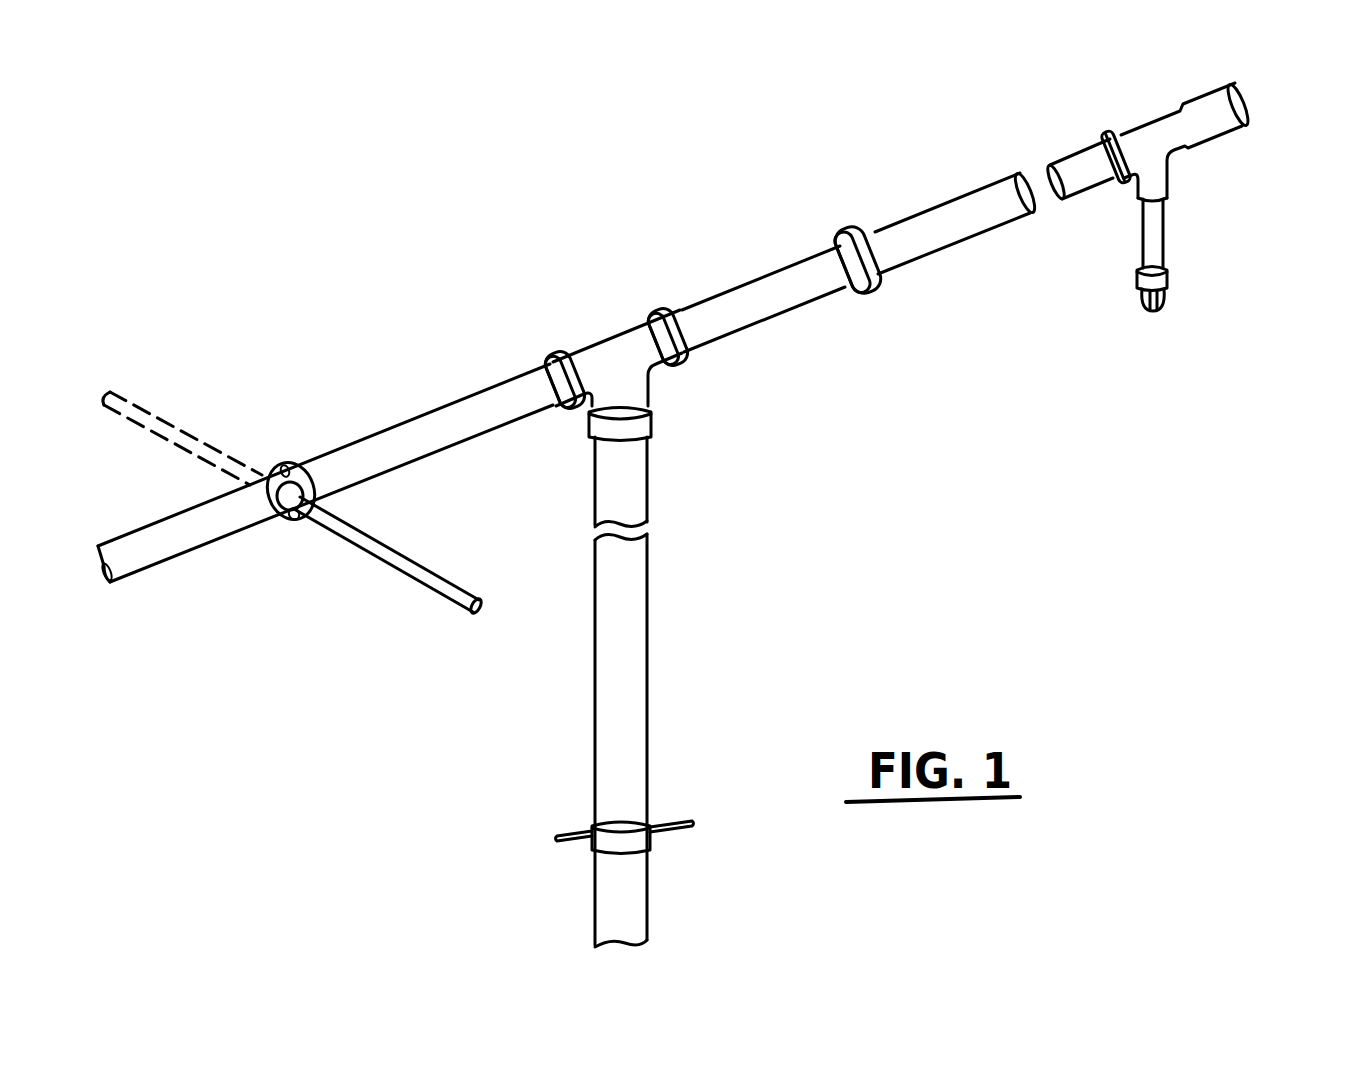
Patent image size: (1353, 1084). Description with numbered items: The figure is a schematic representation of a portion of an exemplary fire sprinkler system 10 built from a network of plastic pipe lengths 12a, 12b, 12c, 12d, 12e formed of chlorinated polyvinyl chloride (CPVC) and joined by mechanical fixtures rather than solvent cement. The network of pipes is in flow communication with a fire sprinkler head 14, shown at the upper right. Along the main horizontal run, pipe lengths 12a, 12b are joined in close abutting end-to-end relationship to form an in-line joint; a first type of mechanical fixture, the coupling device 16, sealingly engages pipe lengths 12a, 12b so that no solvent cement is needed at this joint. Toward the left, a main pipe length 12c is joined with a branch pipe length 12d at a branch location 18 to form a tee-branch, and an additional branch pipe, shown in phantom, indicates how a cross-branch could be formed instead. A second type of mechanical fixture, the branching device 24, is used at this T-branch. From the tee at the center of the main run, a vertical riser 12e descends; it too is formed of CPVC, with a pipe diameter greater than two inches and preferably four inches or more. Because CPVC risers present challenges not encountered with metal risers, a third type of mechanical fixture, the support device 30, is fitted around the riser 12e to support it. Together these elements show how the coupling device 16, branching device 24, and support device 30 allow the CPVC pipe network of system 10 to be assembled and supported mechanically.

The fire sprinkler system 10 is at (932, 495).
The pipe length 12a is at (703, 313).
The pipe length 12b is at (925, 233).
The main pipe length 12c is at (399, 445).
The branch pipe length 12d is at (452, 589).
The vertical riser 12e is at (632, 690).
The fire sprinkler head 14 is at (1170, 300).
The coupling device 16 is at (884, 330).
The branch location 18 is at (272, 500).
The branching device 24 is at (281, 405).
The support device 30 is at (682, 862).